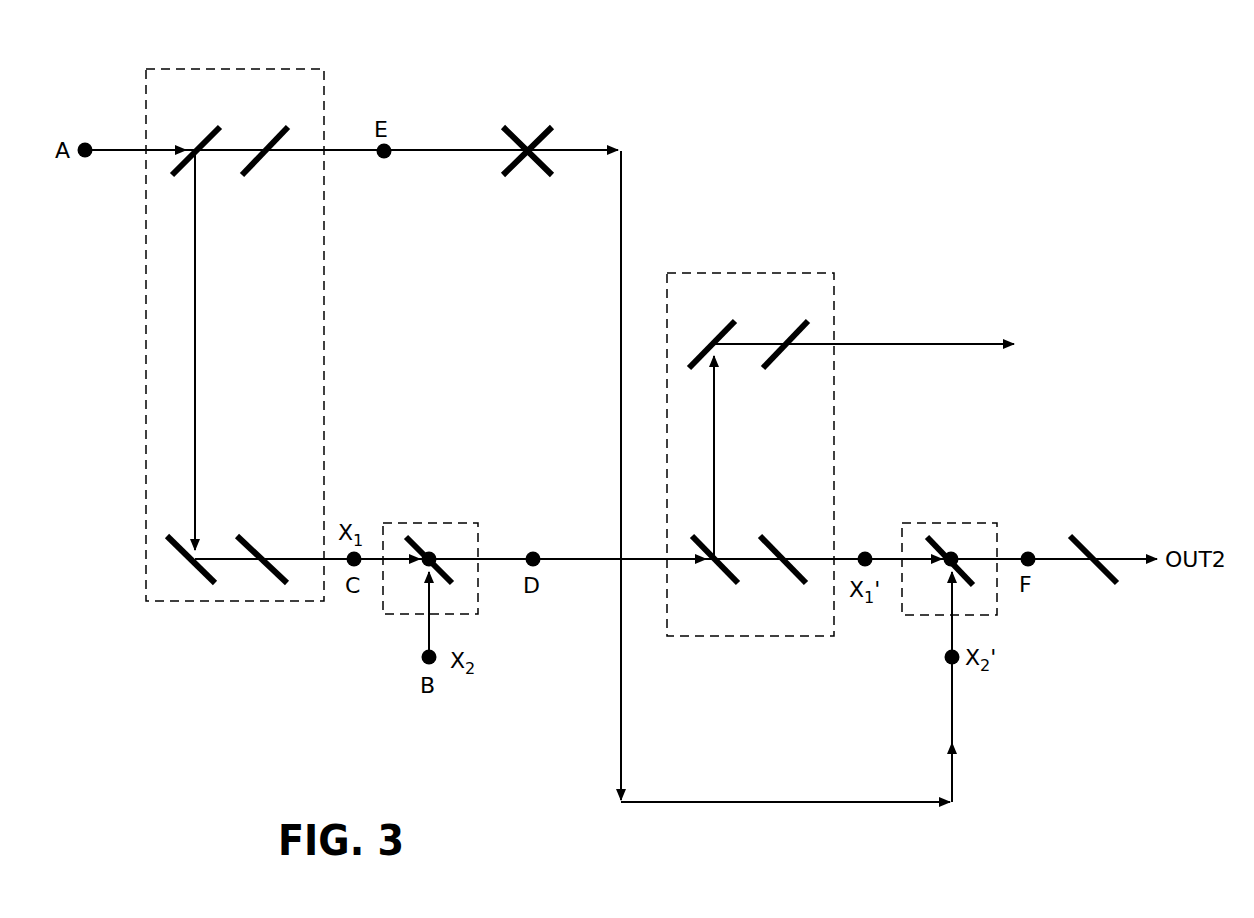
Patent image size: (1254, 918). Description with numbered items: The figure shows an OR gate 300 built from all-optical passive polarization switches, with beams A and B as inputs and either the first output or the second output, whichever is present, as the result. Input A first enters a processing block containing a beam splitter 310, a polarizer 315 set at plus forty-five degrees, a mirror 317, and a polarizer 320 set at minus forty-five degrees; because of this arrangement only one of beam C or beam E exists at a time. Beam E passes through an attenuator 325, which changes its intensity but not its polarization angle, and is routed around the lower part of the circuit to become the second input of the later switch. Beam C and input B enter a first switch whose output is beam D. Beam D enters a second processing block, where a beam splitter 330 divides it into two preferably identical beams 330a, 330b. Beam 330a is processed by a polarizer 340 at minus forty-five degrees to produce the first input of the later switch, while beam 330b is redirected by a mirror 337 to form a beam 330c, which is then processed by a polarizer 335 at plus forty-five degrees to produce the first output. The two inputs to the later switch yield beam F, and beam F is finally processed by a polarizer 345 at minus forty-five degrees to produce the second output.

The OR gate 300 is at (1026, 90).
The beam splitter 310 is at (211, 123).
The polarizer 315 is at (281, 123).
The mirror 317 is at (197, 578).
The polarizer 320 is at (272, 579).
The attenuator 325 is at (554, 124).
The beam splitter 330 is at (714, 572).
The beam 330a is at (730, 556).
The beam 330b is at (718, 420).
The beam 330c is at (733, 347).
The polarizer 335 is at (788, 334).
The mirror 337 is at (713, 334).
The polarizer 340 is at (792, 584).
The polarizer 345 is at (1100, 582).